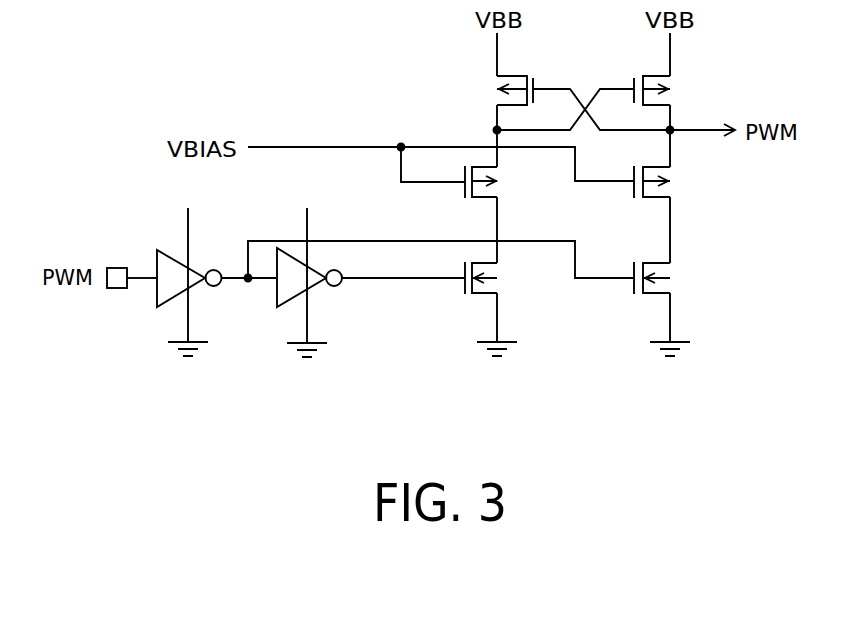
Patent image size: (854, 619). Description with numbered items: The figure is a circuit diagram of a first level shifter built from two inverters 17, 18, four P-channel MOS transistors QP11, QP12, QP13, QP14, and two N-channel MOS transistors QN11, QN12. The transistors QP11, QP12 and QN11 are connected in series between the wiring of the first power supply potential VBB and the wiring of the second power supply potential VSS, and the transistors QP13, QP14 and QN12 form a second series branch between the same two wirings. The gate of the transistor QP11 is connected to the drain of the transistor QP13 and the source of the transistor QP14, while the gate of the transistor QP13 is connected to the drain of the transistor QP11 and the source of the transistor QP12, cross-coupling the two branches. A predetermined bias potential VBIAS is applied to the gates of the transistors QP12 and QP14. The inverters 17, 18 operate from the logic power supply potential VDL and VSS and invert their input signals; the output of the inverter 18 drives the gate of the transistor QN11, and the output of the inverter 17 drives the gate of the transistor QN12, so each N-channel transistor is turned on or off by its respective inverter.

The inverter 17 is at (192, 286).
The inverter 18 is at (315, 285).
The P-channel MOS transistor QP11 is at (583, 87).
The P-channel MOS transistor QP13 is at (583, 87).
The P-channel MOS transistor QP12 is at (513, 182).
The P-channel MOS transistor QP14 is at (685, 182).
The N-channel MOS transistor QN11 is at (513, 278).
The N-channel MOS transistor QN12 is at (685, 278).